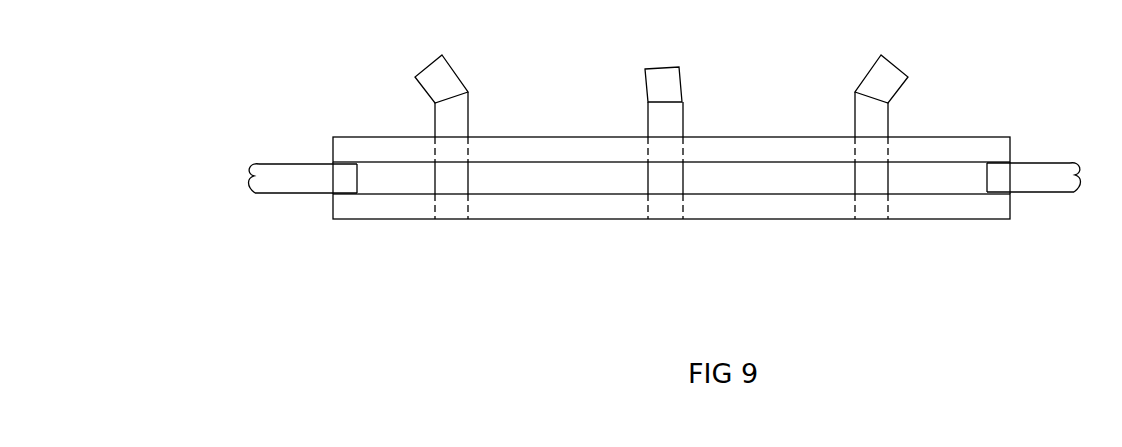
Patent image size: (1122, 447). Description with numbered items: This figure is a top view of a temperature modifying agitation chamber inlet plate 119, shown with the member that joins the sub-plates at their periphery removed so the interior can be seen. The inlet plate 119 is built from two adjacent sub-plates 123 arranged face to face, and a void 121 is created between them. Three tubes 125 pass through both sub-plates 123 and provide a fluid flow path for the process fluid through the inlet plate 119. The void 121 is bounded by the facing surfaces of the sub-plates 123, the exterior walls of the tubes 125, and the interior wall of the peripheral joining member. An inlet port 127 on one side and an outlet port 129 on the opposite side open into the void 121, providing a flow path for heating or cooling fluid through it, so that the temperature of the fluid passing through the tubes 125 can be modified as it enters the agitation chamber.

The temperature modifying agitation chamber inlet plate 119 is at (599, 213).
The void 121 is at (671, 233).
The sub-plates 123 is at (637, 217).
The tubes 125 is at (605, 131).
The inlet port 127 is at (237, 242).
The outlet port 129 is at (1007, 241).